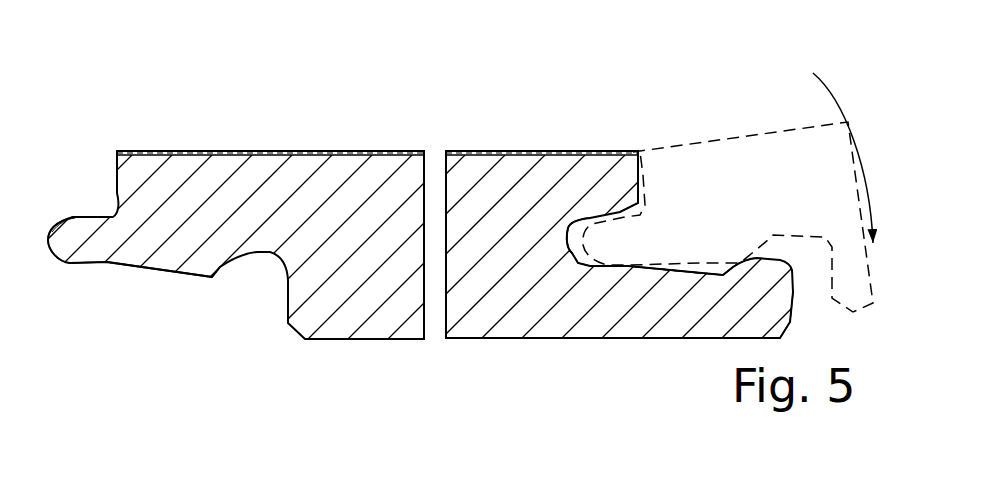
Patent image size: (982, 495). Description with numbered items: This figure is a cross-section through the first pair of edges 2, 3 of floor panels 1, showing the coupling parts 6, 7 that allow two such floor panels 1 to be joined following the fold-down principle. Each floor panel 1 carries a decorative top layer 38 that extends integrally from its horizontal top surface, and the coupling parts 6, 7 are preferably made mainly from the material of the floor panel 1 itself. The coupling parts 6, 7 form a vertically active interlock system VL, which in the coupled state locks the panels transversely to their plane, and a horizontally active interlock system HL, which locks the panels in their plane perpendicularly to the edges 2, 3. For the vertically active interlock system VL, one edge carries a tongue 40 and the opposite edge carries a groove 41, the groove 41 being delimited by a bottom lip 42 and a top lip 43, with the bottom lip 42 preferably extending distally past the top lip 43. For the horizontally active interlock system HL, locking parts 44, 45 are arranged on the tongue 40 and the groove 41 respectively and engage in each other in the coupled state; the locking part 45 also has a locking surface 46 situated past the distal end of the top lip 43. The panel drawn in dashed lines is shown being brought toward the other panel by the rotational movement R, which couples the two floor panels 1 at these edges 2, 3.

The floor panel 1 is at (322, 190).
The first edge 2 is at (92, 152).
The second edge 3 is at (635, 143).
The coupling part 6 is at (112, 287).
The coupling part 7 is at (670, 308).
The decorative top layer 38 is at (386, 151).
The tongue 40 is at (72, 243).
The groove 41 is at (573, 232).
The bottom lip 42 is at (643, 318).
The top lip 43 is at (609, 170).
The locking part 44 is at (203, 267).
The locking part 45 is at (793, 325).
The locking surface 46 is at (724, 267).
The vertically active interlock system VL is at (603, 275).
The horizontally active interlock system HL is at (713, 298).
The rotational movement R is at (813, 73).